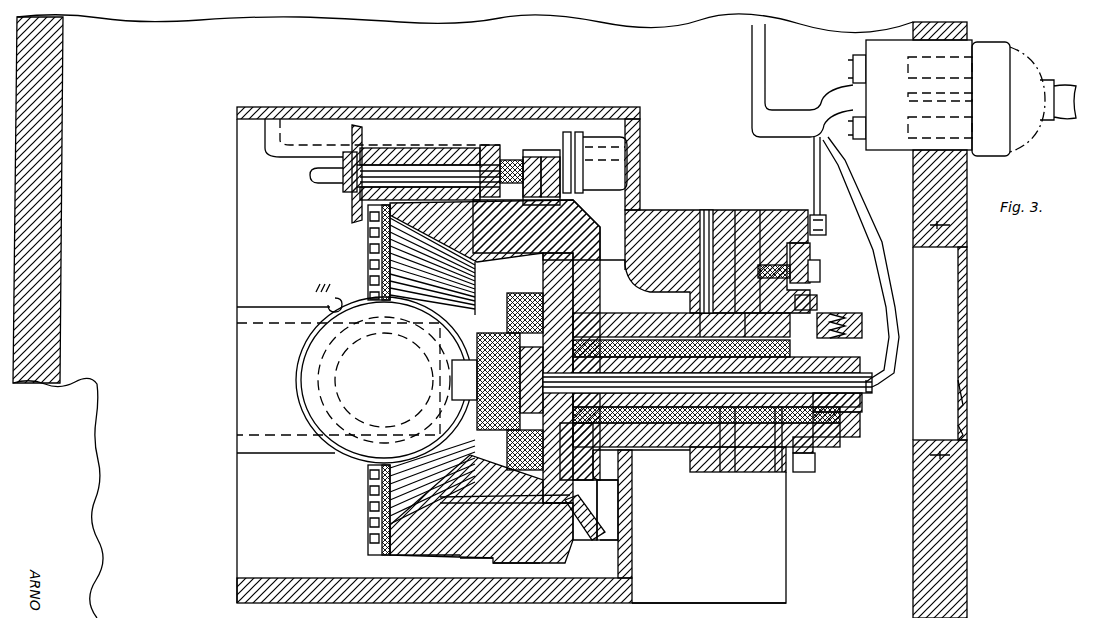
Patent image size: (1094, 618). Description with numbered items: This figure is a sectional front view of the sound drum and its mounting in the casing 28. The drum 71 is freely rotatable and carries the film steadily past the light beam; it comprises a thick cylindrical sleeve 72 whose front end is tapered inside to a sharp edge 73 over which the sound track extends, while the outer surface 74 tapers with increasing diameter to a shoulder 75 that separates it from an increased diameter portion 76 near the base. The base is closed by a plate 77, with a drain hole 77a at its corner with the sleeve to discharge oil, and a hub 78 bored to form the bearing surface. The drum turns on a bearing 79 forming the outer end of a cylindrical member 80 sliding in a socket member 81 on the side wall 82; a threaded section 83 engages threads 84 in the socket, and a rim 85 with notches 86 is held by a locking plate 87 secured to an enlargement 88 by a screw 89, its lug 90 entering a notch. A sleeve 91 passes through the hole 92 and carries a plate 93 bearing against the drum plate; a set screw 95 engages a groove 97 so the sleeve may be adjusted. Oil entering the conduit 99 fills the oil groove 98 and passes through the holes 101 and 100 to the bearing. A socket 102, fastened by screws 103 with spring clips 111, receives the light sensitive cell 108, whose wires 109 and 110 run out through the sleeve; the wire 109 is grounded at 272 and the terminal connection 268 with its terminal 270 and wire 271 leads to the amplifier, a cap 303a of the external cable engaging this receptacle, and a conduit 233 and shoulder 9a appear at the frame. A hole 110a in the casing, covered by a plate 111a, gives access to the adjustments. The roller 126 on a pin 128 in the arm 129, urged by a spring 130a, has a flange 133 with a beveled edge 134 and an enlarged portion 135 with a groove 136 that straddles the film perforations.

The housing 28 is at (507, 107).
The drum 71 is at (443, 563).
The cylindrical sleeve 72 is at (552, 563).
The sharp edge 73 is at (392, 540).
The outer surface 74 is at (410, 562).
The shoulder 75 is at (485, 563).
The increased diameter portion 76 is at (512, 565).
The plate 77 is at (570, 505).
The hole 77a is at (595, 536).
The hub 78 is at (641, 452).
The bearing 79 is at (620, 332).
The cylindrical member 80 is at (646, 291).
The socket member 81 is at (721, 480).
The side wall 82 is at (633, 562).
The threaded section 83 is at (776, 480).
The threads 84 is at (781, 480).
The circular rim or flange 85 is at (815, 458).
The notches 86 is at (805, 470).
The locking plate 87 is at (812, 252).
The enlargement 88 is at (736, 210).
The screw 89 is at (820, 267).
The lug 90 is at (817, 302).
The sleeve 91 is at (607, 499).
The hole 92 is at (736, 480).
The plate 93 is at (545, 480).
The set screw 95 is at (841, 338).
The groove 97 is at (862, 415).
The oil groove 98 is at (860, 432).
The conduit 99 is at (704, 210).
The hole 100 is at (682, 330).
The hole 101 is at (760, 210).
The socket 102 is at (472, 448).
The screws 103 is at (472, 470).
The light sensitive cell 108 is at (297, 356).
The wire 109 is at (896, 322).
The wire 110 is at (900, 338).
The hole 110a is at (964, 435).
The spring clips 111 is at (325, 295).
The plate 111a is at (964, 410).
The roller 126 is at (363, 155).
The pin 128 is at (406, 150).
The arm 129 is at (542, 160).
The spring 130a is at (580, 135).
The flange 133 is at (356, 150).
The beveled edge 134 is at (345, 127).
The portion of larger diameter 135 is at (487, 147).
The groove 136 is at (524, 160).
The shoulder 9a is at (604, 312).
The conduit 233 is at (814, 174).
The terminal connection 268 is at (891, 40).
The terminal 270 is at (853, 66).
The wire 271 is at (770, 82).
The ground point 272 is at (827, 224).
The cap 303a is at (1000, 45).